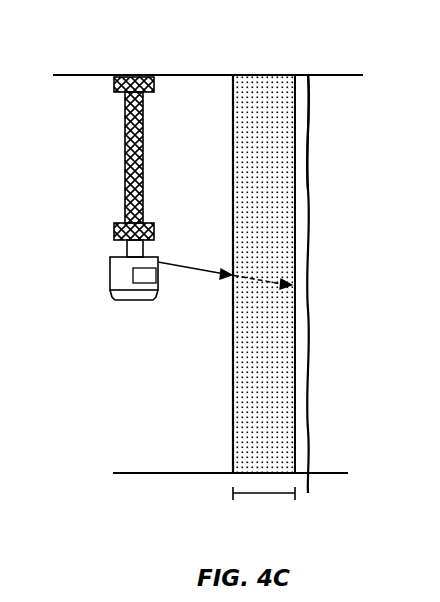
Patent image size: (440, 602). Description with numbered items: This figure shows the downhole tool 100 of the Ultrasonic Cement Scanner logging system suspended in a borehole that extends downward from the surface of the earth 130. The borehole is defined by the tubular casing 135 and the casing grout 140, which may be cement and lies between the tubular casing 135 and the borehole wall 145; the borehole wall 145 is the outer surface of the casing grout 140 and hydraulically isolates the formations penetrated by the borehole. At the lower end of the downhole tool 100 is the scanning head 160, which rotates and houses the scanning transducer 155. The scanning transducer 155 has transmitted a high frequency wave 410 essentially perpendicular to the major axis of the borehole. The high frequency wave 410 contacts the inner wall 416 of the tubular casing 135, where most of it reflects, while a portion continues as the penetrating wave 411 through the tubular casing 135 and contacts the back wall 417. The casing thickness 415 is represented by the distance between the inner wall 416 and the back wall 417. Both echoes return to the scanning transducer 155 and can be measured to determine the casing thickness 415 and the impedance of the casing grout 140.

The downhole tool 100 is at (303, 52).
The surface of the earth 130 is at (340, 75).
The tubular casing 135 is at (310, 155).
The casing grout 140 is at (302, 198).
The borehole wall 145 is at (310, 247).
The scanning transducer 155 is at (133, 275).
The scanning head 160 is at (110, 286).
The high frequency wave 410 is at (197, 268).
The penetrating wave 411 is at (265, 282).
The casing thickness 415 is at (257, 493).
The inner wall 416 is at (233, 435).
The back wall 417 is at (295, 408).